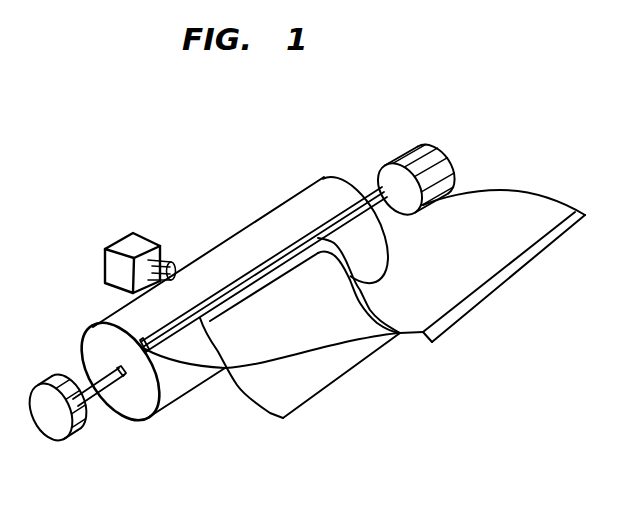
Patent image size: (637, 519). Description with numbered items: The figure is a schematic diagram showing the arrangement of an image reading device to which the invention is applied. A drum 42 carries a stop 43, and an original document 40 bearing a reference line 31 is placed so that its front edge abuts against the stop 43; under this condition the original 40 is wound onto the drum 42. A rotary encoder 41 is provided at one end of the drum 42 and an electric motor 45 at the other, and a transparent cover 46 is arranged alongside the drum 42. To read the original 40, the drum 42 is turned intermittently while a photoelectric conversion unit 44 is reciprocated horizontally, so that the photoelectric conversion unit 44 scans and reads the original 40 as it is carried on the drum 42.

The reference line 31 is at (363, 323).
The original document 40 is at (313, 382).
The rotary encoder 41 is at (63, 437).
The drum 42 is at (268, 238).
The stop 43 is at (350, 208).
The photoelectric conversion unit 44 is at (110, 260).
The electric motor 45 is at (423, 148).
The transparent cover 46 is at (493, 203).